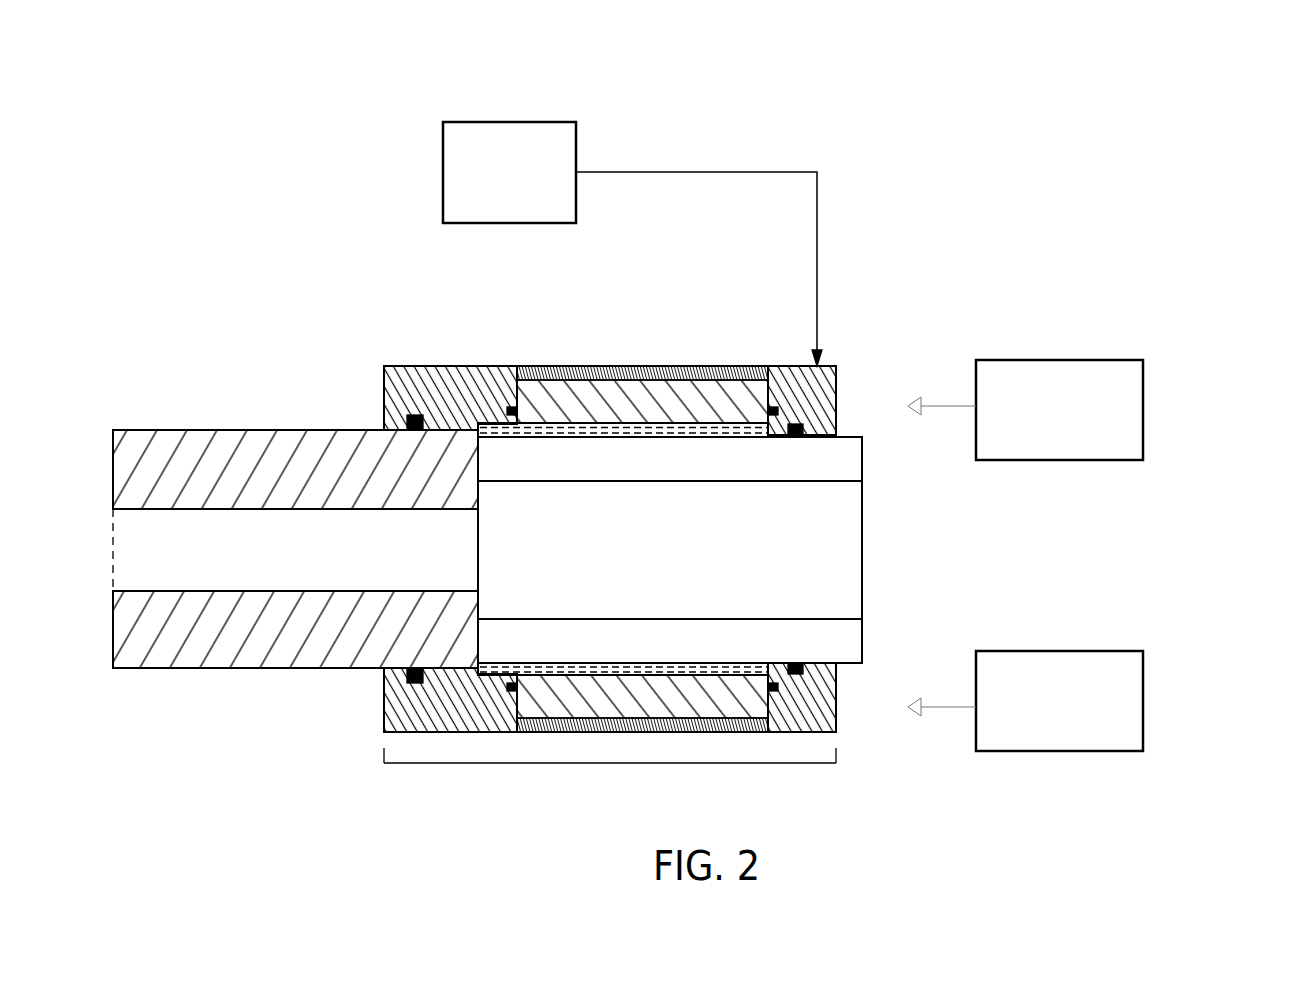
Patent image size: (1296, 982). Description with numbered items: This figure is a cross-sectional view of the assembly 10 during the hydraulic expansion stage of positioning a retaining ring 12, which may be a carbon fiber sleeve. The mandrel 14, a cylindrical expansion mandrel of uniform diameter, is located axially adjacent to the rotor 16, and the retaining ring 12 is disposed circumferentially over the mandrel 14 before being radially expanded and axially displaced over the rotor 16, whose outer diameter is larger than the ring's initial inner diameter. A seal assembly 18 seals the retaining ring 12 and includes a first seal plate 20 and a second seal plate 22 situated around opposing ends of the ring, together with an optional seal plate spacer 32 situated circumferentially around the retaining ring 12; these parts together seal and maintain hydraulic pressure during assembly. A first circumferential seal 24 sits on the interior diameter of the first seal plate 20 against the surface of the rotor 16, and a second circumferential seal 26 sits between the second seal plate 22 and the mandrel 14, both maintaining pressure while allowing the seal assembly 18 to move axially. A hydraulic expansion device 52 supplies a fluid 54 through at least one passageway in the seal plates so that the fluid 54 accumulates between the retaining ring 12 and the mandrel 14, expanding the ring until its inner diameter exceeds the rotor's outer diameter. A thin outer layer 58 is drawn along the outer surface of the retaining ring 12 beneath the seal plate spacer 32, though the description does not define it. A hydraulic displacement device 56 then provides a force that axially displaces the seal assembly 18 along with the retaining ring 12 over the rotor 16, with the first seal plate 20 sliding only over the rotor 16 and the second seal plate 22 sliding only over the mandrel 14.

The assembly 10 is at (1184, 110).
The retaining ring 12 is at (578, 705).
The mandrel 14 is at (580, 481).
The rotor 16 is at (244, 430).
The seal assembly 18 is at (609, 763).
The first seal plate 20 is at (384, 705).
The second seal plate 22 is at (837, 690).
The first circumferential seal 24 is at (407, 418).
The second circumferential seal 26 is at (800, 424).
The seal plate spacer 32 is at (590, 366).
The hydraulic expansion device 52 is at (510, 122).
The fluid 54 is at (673, 437).
The hydraulic displacement device 56 is at (1060, 360).
The outer layer 58 is at (673, 378).